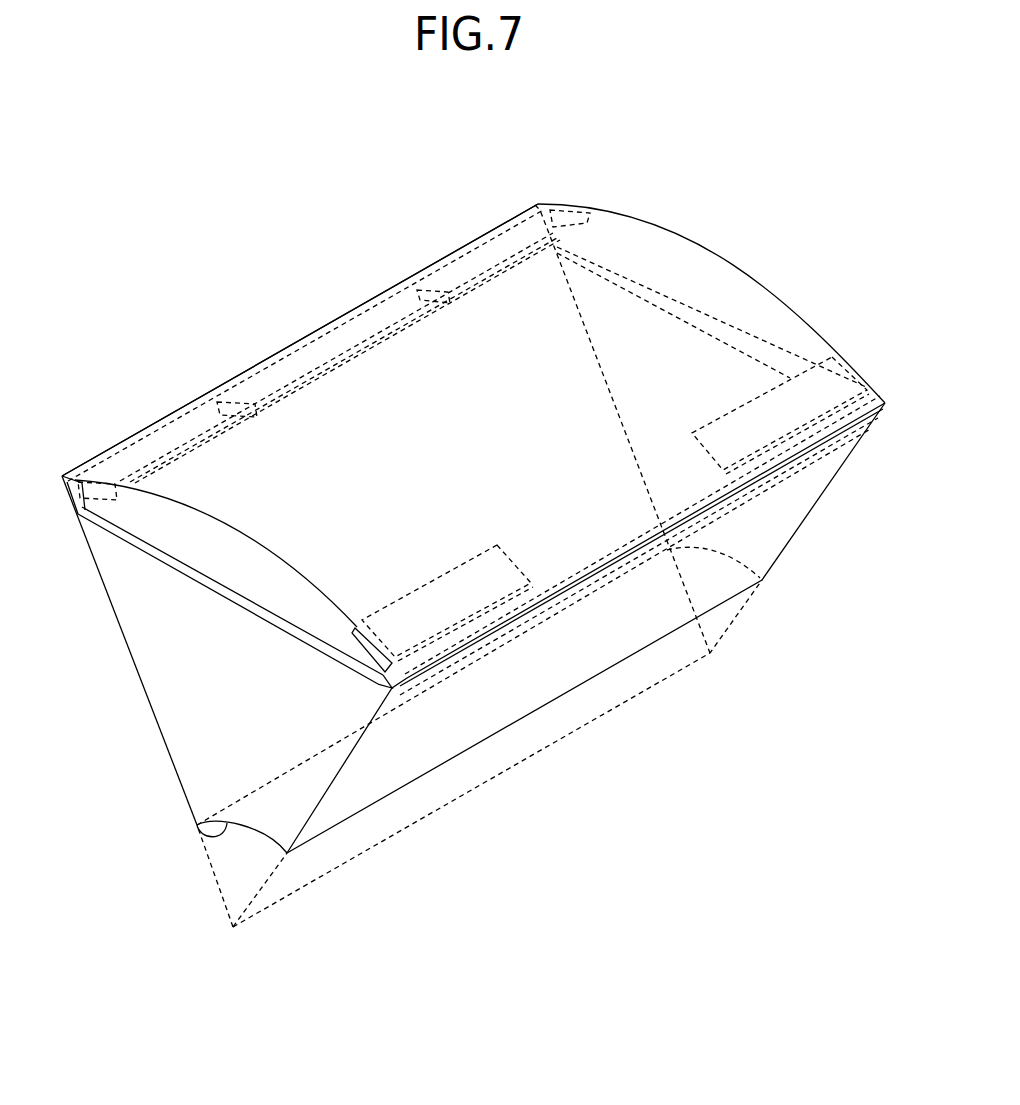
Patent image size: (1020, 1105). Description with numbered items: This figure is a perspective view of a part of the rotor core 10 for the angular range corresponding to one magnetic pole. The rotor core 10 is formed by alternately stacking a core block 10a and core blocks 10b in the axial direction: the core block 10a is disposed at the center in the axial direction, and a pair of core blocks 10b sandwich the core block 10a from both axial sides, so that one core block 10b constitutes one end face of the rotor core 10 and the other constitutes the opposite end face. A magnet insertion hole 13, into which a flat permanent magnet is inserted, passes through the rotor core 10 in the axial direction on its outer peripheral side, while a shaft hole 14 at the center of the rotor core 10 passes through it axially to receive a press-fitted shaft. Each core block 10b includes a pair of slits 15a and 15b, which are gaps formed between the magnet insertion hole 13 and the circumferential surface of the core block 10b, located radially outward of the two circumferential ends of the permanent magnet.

The rotor core 10 is at (208, 190).
The core block 10a is at (328, 323).
The core block 10b is at (515, 222).
The magnet insertion hole 13 is at (180, 576).
The shaft hole 14 is at (193, 825).
The slit 15a is at (535, 205).
The slit 15b is at (780, 413).